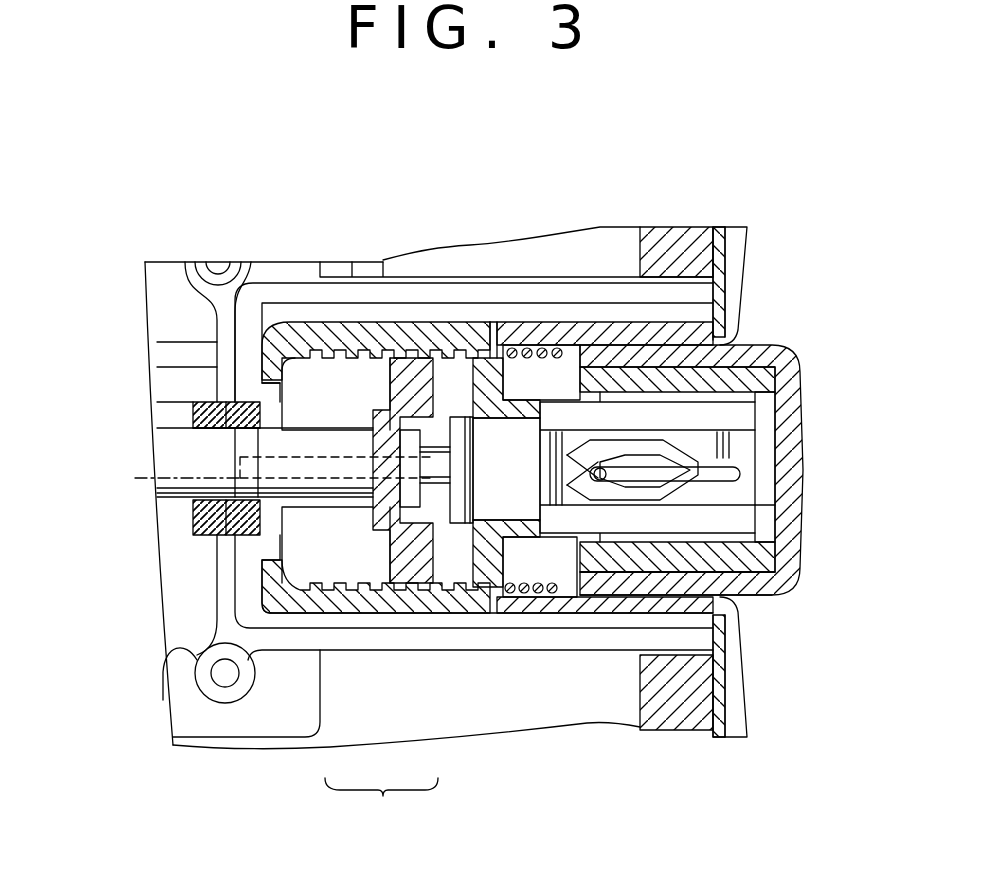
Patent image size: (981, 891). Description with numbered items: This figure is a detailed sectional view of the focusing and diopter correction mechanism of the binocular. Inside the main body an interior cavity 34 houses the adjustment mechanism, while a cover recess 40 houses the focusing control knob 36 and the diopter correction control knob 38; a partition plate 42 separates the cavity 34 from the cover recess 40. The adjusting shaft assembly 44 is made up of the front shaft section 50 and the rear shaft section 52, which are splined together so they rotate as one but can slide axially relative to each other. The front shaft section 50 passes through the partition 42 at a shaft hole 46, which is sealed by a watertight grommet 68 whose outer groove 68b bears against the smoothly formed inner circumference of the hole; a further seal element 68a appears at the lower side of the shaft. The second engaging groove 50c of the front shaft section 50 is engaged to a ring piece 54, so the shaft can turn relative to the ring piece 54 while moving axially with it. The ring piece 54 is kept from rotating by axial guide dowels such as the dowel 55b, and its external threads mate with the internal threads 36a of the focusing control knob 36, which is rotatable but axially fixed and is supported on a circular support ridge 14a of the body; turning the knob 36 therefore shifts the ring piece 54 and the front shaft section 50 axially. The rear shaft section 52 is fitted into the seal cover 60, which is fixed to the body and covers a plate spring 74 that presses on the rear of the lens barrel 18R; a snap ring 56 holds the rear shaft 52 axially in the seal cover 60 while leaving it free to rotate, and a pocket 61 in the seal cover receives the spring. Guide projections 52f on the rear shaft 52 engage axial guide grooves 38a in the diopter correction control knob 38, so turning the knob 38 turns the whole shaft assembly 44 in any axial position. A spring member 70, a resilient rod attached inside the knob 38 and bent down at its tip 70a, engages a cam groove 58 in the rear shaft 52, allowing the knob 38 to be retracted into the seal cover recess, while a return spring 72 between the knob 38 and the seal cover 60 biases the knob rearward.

The circular support ridge 14a is at (262, 395).
The lens barrel 18R is at (705, 248).
The cavity 34 is at (180, 690).
The focusing control knob 36 is at (452, 523).
The internal threads 36a is at (490, 350).
The diopter correction control knob 38 is at (785, 382).
The guide groove 38a is at (730, 560).
The cover recess 40 is at (573, 625).
The partition plate 42 is at (230, 355).
The adjusting shaft assembly 44 is at (381, 801).
The shaft hole 46 is at (230, 545).
The front shaft section 50 is at (334, 520).
The second engaging groove 50c is at (387, 453).
The rear shaft section 52 is at (730, 440).
The guide projection 52f is at (760, 525).
The ring piece 54 is at (400, 384).
The axial guide dowel 55b is at (251, 462).
The snap ring 56 is at (545, 345).
The cam groove 58 is at (680, 484).
The seal cover 60 is at (733, 307).
The spring pocket 61 is at (527, 400).
The grommet 68 is at (250, 414).
The lower seal 68a is at (232, 522).
The groove 68b is at (250, 430).
The spring member 70 is at (733, 473).
The tip 70a is at (567, 487).
The return spring 72 is at (537, 595).
The plate spring 74 is at (742, 273).